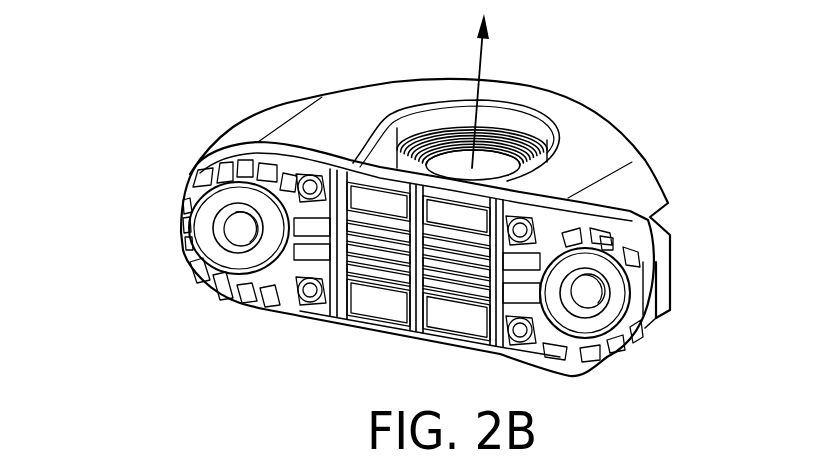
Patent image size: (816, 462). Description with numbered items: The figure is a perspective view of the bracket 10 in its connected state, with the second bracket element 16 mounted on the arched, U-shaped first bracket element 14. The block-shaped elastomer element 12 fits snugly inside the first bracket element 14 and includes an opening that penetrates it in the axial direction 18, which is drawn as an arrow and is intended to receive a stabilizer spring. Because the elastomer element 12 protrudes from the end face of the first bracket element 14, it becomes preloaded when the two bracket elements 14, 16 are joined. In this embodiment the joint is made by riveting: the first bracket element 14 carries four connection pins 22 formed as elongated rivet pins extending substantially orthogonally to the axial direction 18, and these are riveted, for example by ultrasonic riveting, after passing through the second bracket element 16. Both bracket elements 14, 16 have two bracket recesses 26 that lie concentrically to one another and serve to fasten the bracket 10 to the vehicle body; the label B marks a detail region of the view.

The bracket 10 is at (299, 56).
The elastomer element 12 is at (554, 154).
The first bracket element 14 is at (612, 167).
The second bracket element 16 is at (181, 217).
The axial direction 18 is at (481, 85).
The connection pins 22 is at (302, 311).
The bracket recesses 26 is at (247, 240).
The detail view B is at (309, 184).